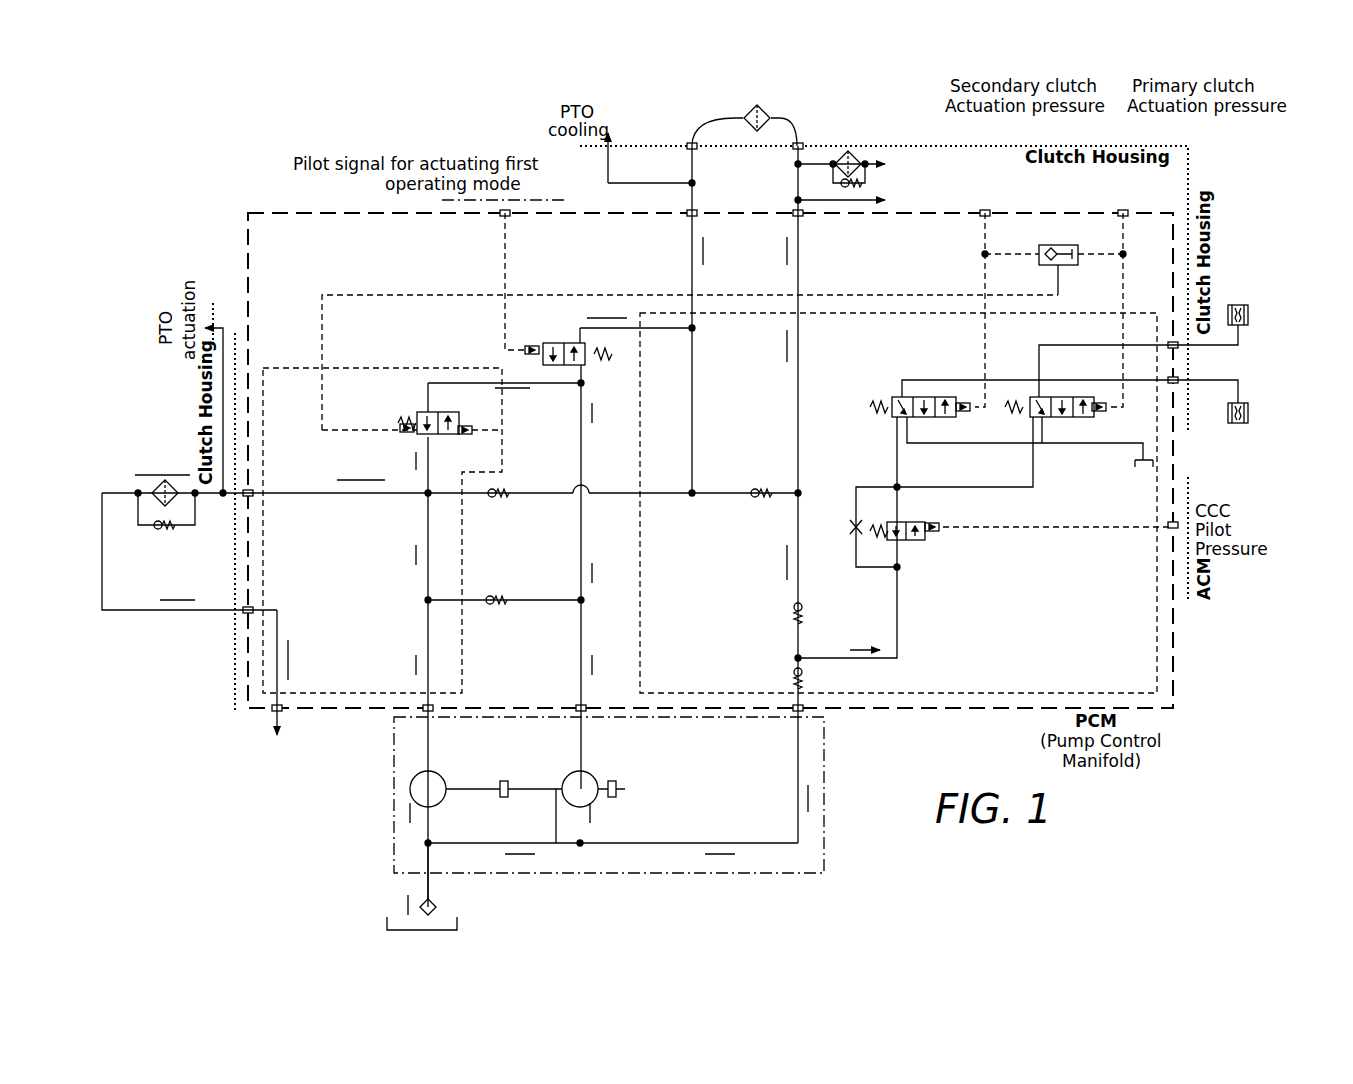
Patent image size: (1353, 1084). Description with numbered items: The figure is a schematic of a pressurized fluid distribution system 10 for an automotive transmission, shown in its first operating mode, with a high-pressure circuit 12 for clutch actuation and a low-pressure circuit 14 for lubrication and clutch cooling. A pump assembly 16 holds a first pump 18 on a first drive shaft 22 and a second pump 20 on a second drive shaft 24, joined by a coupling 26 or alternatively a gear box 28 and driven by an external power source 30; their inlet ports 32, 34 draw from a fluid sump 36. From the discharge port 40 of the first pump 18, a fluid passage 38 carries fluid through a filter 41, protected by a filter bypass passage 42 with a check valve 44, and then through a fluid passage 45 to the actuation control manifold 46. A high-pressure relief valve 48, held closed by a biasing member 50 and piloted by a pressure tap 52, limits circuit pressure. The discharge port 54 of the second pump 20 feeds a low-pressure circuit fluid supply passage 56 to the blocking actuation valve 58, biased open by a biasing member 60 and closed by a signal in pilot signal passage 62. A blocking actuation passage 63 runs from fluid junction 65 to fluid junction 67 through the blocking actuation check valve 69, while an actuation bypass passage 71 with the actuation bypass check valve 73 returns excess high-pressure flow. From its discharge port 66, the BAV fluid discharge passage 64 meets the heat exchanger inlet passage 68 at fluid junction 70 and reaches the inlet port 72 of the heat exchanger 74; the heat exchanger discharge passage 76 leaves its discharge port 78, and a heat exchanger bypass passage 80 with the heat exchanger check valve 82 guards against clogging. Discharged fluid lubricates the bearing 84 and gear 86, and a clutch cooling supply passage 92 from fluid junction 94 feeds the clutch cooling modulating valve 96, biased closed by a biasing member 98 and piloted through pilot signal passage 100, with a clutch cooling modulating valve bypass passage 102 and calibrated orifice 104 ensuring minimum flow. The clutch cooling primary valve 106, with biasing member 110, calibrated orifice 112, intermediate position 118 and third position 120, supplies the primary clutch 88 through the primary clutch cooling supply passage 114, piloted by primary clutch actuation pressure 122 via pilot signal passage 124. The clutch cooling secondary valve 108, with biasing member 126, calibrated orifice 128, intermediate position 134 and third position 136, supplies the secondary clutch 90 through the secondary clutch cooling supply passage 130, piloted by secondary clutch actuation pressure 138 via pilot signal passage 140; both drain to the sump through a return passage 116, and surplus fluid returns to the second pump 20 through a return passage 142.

The pressurized fluid distribution system 10 is at (297, 128).
The high-pressure circuit 12 is at (285, 368).
The low-pressure circuit 14 is at (1173, 680).
The pump assembly 16 is at (826, 825).
The first pump 18 is at (410, 790).
The second pump 20 is at (600, 788).
The first drive shaft 22 is at (504, 797).
The second drive shaft 24 is at (566, 792).
The coupling 26 is at (553, 793).
The gear box 28 is at (504, 800).
The external power source 30 is at (612, 797).
The inlet port 32 is at (428, 810).
The inlet port 34 is at (580, 806).
The fluid sump 36 is at (460, 922).
The fluid passage 38 is at (332, 495).
The discharge port 40 is at (428, 775).
The filter 41 is at (150, 483).
The filter bypass passage 42 is at (137, 510).
The check valve 44 is at (178, 520).
The fluid passage 45 is at (165, 612).
The actuation control manifold 46 is at (287, 767).
The high-pressure relief valve 48 is at (425, 413).
The biasing member 50 is at (405, 421).
The pressure tap 52 is at (487, 450).
The discharge port 54 is at (580, 771).
The low-pressure circuit fluid supply passage 56 is at (581, 455).
The blocking actuation valve 58 is at (587, 366).
The biasing member 60 is at (614, 356).
The pilot signal passage 62 is at (505, 240).
The blocking actuation passage 63 is at (540, 600).
The BAV fluid discharge passage 64 is at (632, 328).
The fluid junction 65 is at (585, 603).
The discharge port 66 is at (578, 343).
The fluid junction 67 is at (428, 600).
The heat exchanger inlet passage 68 is at (694, 232).
The blocking actuation check valve 69 is at (495, 597).
The fluid junction 70 is at (694, 328).
The actuation bypass passage 71 is at (576, 496).
The inlet port 72 is at (692, 143).
The actuation bypass check valve 73 is at (498, 490).
The heat exchanger 74 is at (772, 112).
The heat exchanger discharge passage 76 is at (800, 365).
The discharge port 78 is at (803, 143).
The heat exchanger bypass passage 80 is at (722, 496).
The heat exchanger check valve 82 is at (757, 500).
The bearing 84 is at (907, 169).
The gear 86 is at (898, 199).
The primary clutch 88 is at (1240, 305).
The secondary clutch 90 is at (1240, 425).
The clutch cooling supply passage 92 is at (897, 620).
The fluid junction 94 is at (796, 660).
The clutch cooling modulating valve 96 is at (912, 542).
The biasing member 98 is at (880, 520).
The pilot signal passage 100 is at (1040, 530).
The clutch cooling modulating valve bypass passage 102 is at (855, 500).
The calibrated orifice 104 is at (850, 527).
The clutch cooling primary valve 106 is at (1062, 397).
The clutch cooling secondary valve 108 is at (920, 400).
The biasing member 110 is at (1030, 442).
The calibrated orifice 112 is at (1033, 400).
The primary clutch cooling supply passage 114 is at (1113, 345).
The return passage 116 is at (950, 444).
The intermediate position 118 is at (1040, 397).
The third position 120 is at (1093, 418).
The primary clutch actuation pressure 122 is at (1125, 213).
The pilot signal passage 124 is at (1120, 276).
The biasing member 126 is at (872, 405).
The calibrated orifice 128 is at (896, 400).
The secondary clutch cooling supply passage 130 is at (985, 380).
The intermediate position 134 is at (900, 398).
The third position 136 is at (958, 416).
The secondary clutch actuation pressure 138 is at (985, 213).
The pilot signal passage 140 is at (985, 230).
The return passage 142 is at (797, 762).